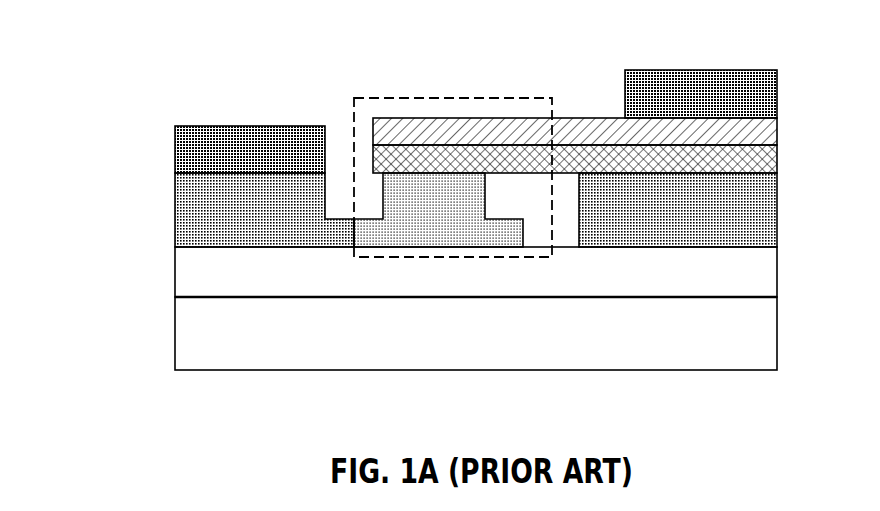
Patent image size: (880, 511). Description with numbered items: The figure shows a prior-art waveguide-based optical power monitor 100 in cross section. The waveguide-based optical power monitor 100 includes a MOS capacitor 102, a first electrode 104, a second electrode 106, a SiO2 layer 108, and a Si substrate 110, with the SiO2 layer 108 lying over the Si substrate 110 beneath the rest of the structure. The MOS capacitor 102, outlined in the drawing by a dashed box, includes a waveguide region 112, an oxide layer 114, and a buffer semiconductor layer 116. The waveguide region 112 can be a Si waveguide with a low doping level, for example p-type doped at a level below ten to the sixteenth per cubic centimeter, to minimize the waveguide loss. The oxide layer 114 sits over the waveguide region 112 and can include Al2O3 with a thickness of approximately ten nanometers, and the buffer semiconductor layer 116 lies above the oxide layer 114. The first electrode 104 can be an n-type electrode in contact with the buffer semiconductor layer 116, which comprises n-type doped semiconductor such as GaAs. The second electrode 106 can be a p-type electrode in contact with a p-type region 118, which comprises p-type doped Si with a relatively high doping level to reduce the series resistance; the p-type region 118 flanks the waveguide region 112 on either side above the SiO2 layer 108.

The waveguide-based optical power monitor 100 is at (126, 60).
The MOS capacitor 102 is at (360, 97).
The first electrode 104 is at (717, 77).
The second electrode 106 is at (260, 142).
The SiO2 layer 108 is at (763, 282).
The Si substrate 110 is at (766, 353).
The waveguide region 112 is at (448, 237).
The oxide layer 114 is at (460, 150).
The buffer semiconductor layer 116 is at (528, 137).
The p-type region 118 is at (185, 227).